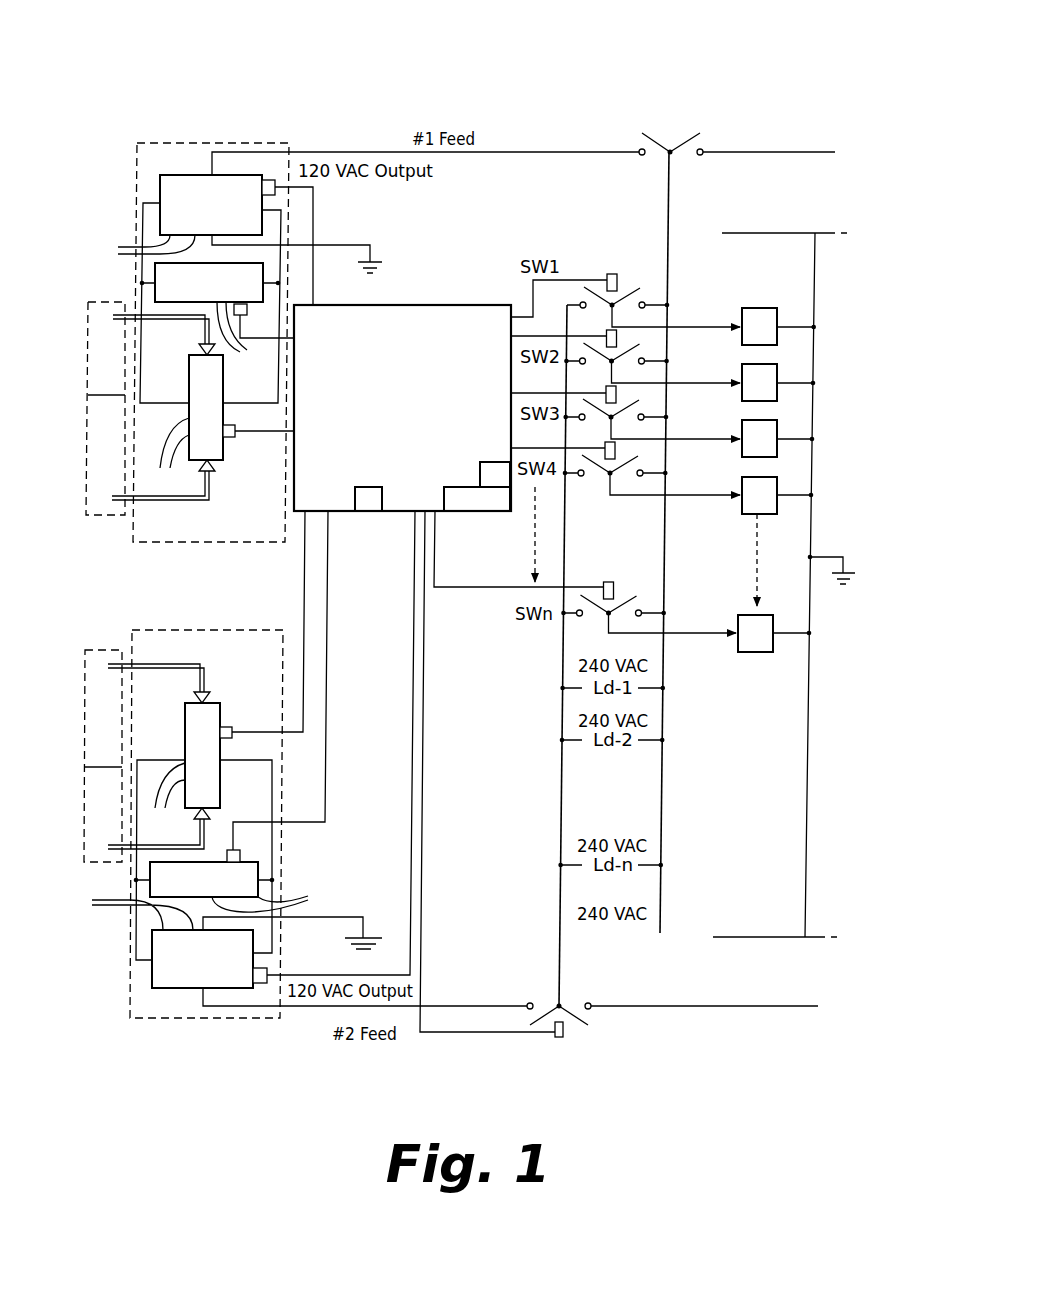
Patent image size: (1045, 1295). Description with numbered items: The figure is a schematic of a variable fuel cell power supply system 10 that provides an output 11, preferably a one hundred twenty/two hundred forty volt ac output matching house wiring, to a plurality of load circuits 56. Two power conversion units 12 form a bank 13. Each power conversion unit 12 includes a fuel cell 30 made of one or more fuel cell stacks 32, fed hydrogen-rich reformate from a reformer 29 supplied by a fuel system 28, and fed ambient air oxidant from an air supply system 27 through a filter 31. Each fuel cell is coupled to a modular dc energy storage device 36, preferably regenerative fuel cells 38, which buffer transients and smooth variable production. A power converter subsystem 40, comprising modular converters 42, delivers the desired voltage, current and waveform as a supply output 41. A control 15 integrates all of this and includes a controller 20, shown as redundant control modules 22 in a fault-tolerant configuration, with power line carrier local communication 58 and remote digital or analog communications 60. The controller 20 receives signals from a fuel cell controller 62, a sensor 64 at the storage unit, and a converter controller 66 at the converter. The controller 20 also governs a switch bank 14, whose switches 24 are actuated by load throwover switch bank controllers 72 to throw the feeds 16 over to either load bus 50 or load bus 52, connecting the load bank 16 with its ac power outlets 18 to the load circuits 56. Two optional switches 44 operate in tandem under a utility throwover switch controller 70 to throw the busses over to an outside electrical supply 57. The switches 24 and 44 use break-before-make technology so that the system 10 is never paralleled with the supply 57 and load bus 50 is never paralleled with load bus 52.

The variable fuel cell power supply system 10 is at (133, 83).
The output 11 is at (739, 104).
The power conversion unit 12 is at (130, 181).
The bank 13 is at (218, 140).
The switch bank 14 is at (626, 265).
The control 15 is at (448, 225).
The load bank 16 is at (712, 285).
The ac power outlet 18 is at (718, 441).
The controller 20 is at (400, 300).
The control module 22 is at (463, 502).
The switch 24 is at (540, 337).
The air supply system 27 is at (84, 350).
The fuel system 28 is at (82, 443).
The reformer 29 is at (100, 413).
The fuel cell 30 is at (186, 385).
The filter 31 is at (102, 313).
The fuel cell stack 32 is at (166, 626).
The dc energy storage device 36 is at (146, 268).
The regenerative fuel cell 38 is at (273, 607).
The power converter subsystem 40 is at (175, 173).
The supply output 41 is at (521, 149).
The modular converter 42 is at (127, 582).
The optional switch 44 is at (657, 160).
The load bus 50 is at (667, 703).
The load bus 52 is at (559, 878).
The load circuit 56 is at (792, 332).
The electrical supply 57 is at (771, 149).
The power line carrier local communication 58 is at (497, 473).
The remote digital or analog communications 60 is at (368, 502).
The fuel cell controller 62 is at (230, 438).
The sensor 64 is at (247, 309).
The converter controller 66 is at (270, 178).
The utility throwover switch controller 70 is at (563, 1032).
The load throwover switch bank controller 72 is at (619, 281).